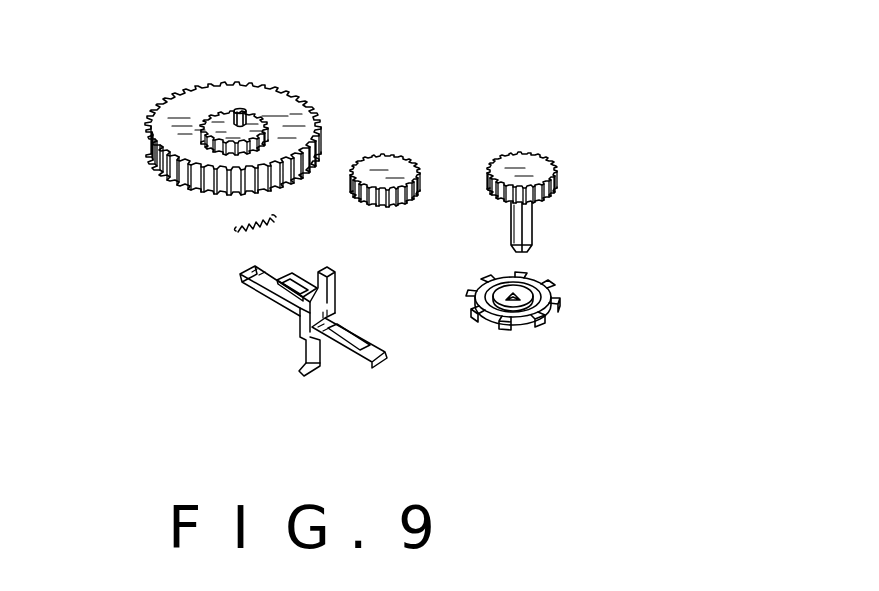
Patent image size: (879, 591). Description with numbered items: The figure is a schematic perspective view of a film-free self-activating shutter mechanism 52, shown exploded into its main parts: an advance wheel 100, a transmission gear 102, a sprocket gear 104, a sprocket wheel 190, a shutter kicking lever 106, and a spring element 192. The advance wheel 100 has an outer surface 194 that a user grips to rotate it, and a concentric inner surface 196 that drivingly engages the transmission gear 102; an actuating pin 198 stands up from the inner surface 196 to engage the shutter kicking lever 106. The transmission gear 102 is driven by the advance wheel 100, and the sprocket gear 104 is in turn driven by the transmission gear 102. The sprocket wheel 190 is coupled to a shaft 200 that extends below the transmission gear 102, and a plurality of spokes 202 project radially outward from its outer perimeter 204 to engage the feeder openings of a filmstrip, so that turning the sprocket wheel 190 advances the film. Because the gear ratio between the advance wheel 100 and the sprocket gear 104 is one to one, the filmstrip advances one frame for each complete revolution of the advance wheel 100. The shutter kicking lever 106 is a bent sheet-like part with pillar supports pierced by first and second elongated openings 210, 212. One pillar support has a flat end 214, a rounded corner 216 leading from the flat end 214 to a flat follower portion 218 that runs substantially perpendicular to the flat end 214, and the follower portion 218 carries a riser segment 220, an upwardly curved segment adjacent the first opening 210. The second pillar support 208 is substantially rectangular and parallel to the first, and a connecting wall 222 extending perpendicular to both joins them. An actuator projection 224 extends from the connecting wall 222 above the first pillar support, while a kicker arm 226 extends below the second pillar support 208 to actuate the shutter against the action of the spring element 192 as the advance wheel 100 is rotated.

The shutter mechanism 52 is at (478, 68).
The advance wheel 100 is at (290, 117).
The transmission gear 102 is at (397, 172).
The sprocket gear 104 is at (543, 160).
The shutter kicking lever 106 is at (221, 381).
The sprocket wheel 190 is at (550, 290).
The spring element 192 is at (238, 219).
The outer surface 194 is at (220, 84).
The inner surface 196 is at (203, 136).
The actuating pin 198 is at (243, 110).
The shaft 200 is at (522, 225).
The spokes 202 is at (478, 305).
The outer perimeter 204 is at (528, 322).
The second pillar support 208 is at (242, 287).
The first elongated opening 210 is at (292, 303).
The second elongated opening 212 is at (338, 362).
The flat end 214 is at (240, 272).
The rounded corner 216 is at (265, 265).
The follower portion 218 is at (287, 273).
The riser segment 220 is at (293, 270).
The connecting wall 222 is at (335, 312).
The actuator projection 224 is at (336, 292).
The kicker arm 226 is at (306, 378).